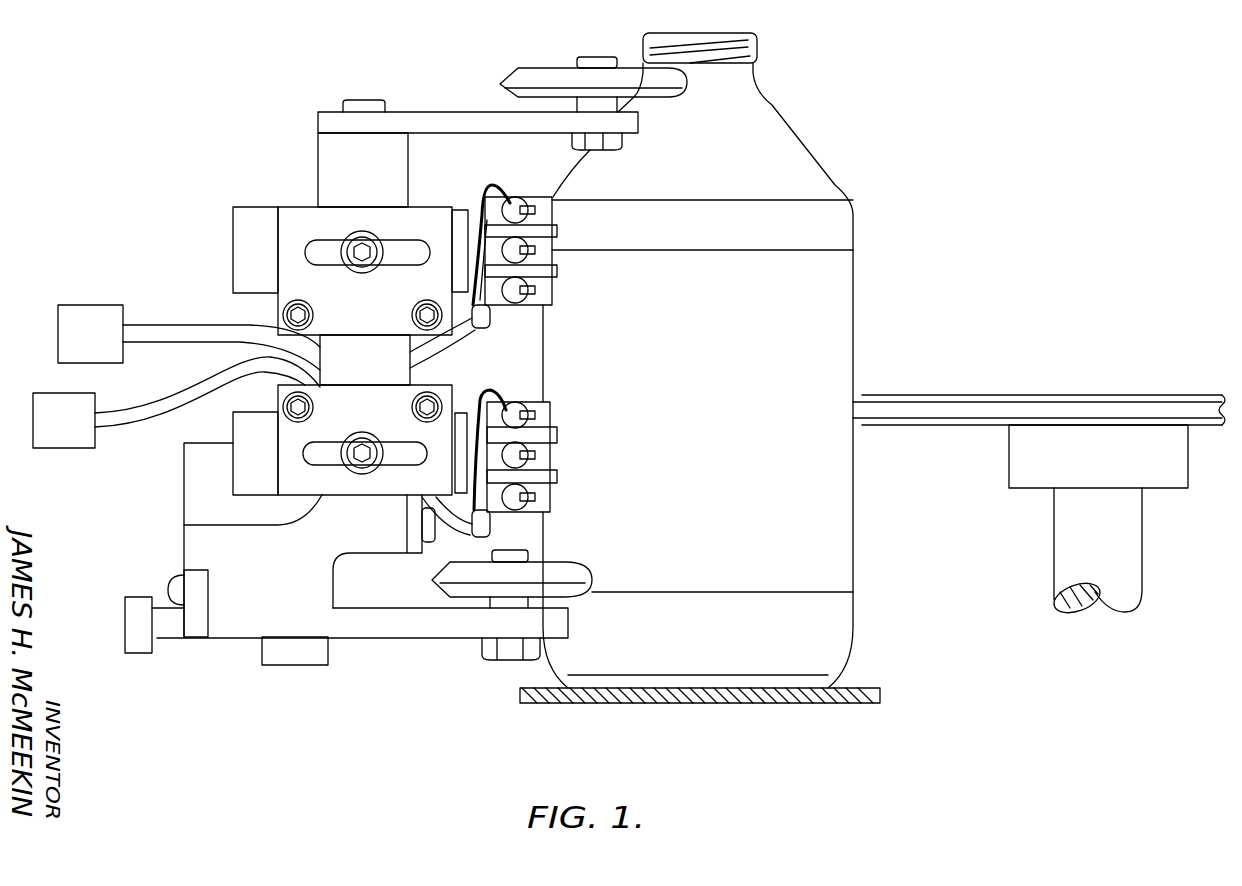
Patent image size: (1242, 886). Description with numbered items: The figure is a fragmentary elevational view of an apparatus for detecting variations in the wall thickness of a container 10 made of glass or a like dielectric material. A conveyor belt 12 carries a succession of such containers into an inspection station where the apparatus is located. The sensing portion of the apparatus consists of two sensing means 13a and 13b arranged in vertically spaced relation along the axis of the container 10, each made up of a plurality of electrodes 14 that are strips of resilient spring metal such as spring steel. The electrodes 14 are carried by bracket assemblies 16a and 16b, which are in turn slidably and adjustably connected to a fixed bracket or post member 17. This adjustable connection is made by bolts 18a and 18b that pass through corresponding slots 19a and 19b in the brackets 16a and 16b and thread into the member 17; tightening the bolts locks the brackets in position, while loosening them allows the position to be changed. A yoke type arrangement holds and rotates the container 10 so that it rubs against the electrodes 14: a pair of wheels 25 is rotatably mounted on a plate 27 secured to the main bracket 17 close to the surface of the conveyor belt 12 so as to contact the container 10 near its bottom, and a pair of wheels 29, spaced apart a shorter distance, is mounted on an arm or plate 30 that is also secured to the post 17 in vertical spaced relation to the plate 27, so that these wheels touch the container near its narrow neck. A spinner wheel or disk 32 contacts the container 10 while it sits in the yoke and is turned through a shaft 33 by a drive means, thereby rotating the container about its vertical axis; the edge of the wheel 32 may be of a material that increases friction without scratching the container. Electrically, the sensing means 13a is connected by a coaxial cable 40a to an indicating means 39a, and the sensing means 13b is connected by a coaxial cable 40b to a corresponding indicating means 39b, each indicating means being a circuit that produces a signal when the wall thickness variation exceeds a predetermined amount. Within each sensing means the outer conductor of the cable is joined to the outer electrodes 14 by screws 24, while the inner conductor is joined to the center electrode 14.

The container 10 is at (818, 150).
The conveyor belt 12 is at (870, 688).
The sensing means 13a is at (494, 180).
The sensing means 13b is at (527, 521).
The electrode 14 is at (540, 197).
The bracket assembly 16a is at (310, 220).
The bracket assembly 16b is at (288, 470).
The bracket or post member 17 is at (340, 142).
The bolt 18a is at (366, 256).
The bolt 18b is at (360, 450).
The slot 19a is at (327, 258).
The slot 19b is at (332, 462).
The screw 24 is at (515, 305).
The wheel 25 is at (440, 580).
The plate or arm 27 is at (390, 622).
The wheel 29 is at (540, 80).
The arm or plate 30 is at (440, 125).
The spinner wheel 32 is at (985, 415).
The shaft 33 is at (1070, 538).
The indicating means 39a is at (72, 305).
The indicating means 39b is at (82, 448).
The coaxial cable 40a is at (165, 328).
The coaxial cable 40b is at (128, 405).